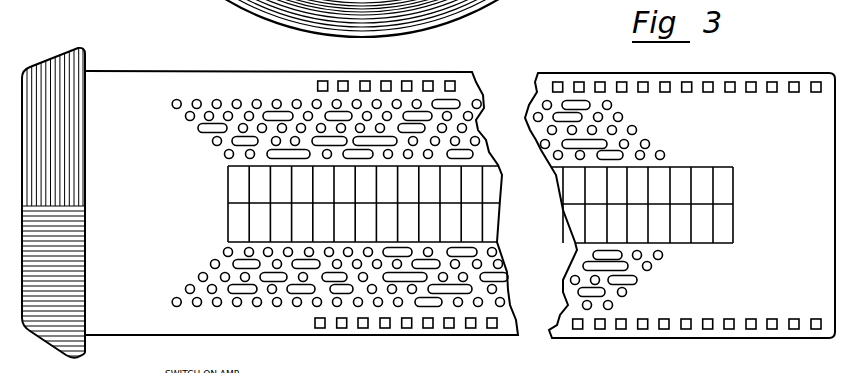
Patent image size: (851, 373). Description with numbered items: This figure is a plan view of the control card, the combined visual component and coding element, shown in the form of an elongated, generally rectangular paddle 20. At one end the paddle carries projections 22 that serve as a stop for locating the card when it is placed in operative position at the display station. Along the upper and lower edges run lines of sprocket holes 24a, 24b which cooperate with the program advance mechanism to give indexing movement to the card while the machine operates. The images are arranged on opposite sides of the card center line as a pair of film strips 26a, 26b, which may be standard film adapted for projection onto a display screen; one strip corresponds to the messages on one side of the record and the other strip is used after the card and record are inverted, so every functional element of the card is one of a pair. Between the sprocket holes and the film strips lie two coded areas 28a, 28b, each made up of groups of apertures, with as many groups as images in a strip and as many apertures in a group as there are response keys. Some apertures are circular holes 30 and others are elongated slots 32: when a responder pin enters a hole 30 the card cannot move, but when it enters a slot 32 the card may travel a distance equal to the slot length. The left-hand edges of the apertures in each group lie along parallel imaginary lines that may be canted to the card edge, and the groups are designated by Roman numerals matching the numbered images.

The paddle 20 is at (145, 71).
The projections 22 is at (76, 49).
The sprocket holes 24a is at (603, 326).
The sprocket holes 24b is at (406, 82).
The film strip 26a is at (228, 222).
The film strip 26b is at (228, 186).
The coded area 28a is at (154, 286).
The coded area 28b is at (170, 125).
The hole 30 is at (257, 99).
The slot 32 is at (281, 113).